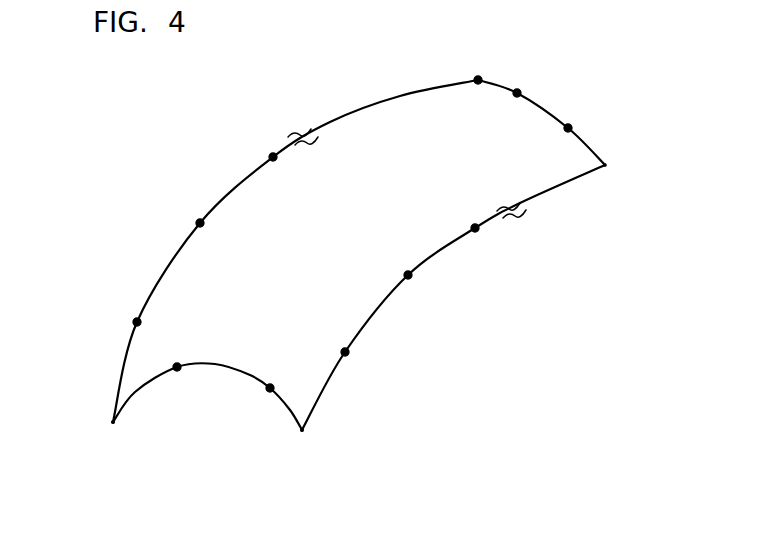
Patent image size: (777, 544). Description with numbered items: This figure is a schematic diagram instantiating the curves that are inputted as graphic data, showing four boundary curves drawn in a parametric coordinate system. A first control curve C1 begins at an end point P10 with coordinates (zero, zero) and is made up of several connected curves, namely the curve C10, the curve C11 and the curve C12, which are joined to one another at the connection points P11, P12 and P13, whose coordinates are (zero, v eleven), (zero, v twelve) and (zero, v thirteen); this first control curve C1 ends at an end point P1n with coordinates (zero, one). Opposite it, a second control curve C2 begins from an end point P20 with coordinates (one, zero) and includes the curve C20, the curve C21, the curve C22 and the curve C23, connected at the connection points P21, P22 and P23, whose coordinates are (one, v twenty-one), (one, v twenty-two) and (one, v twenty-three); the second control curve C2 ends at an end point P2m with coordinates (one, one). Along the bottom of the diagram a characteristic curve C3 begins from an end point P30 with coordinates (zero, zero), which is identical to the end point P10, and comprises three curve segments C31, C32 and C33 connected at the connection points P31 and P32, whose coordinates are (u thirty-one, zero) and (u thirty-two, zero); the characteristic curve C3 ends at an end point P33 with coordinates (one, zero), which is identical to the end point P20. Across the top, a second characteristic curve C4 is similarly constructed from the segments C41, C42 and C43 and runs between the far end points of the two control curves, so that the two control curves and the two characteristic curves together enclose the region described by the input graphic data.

The first control curve C1 is at (260, 251).
The curve C10 is at (128, 350).
The curve C11 is at (185, 237).
The curve C12 is at (236, 168).
The second control curve C2 is at (453, 297).
The curve C20 is at (322, 380).
The curve C21 is at (385, 297).
The curve C22 is at (443, 247).
The curve C23 is at (515, 226).
The characteristic curve C3 is at (207, 437).
The curve segment C31 is at (147, 381).
The curve segment C32 is at (209, 365).
The curve segment C33 is at (277, 398).
The characteristic curve C4 is at (565, 100).
The curve segment C41 is at (506, 86).
The curve segment C42 is at (545, 105).
The curve segment C43 is at (603, 136).
The end point P10 is at (68, 426).
The connection point P11 is at (185, 321).
The connection point P12 is at (248, 230).
The connection point P13 is at (321, 164).
The end point P1n is at (484, 69).
The end point P2m is at (642, 179).
The end point P20 is at (325, 443).
The connection point P21 is at (299, 346).
The connection point P22 is at (362, 263).
The connection point P23 is at (440, 215).
The end point P30 is at (61, 445).
The connection point P31 is at (193, 356).
The connection point P32 is at (293, 380).
The end point P33 is at (323, 462).